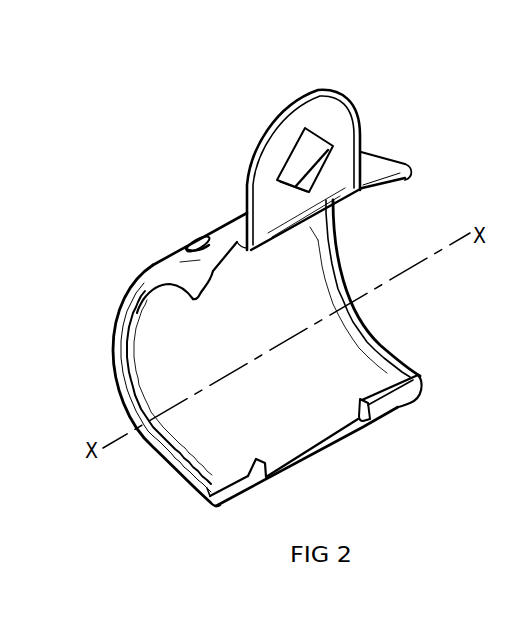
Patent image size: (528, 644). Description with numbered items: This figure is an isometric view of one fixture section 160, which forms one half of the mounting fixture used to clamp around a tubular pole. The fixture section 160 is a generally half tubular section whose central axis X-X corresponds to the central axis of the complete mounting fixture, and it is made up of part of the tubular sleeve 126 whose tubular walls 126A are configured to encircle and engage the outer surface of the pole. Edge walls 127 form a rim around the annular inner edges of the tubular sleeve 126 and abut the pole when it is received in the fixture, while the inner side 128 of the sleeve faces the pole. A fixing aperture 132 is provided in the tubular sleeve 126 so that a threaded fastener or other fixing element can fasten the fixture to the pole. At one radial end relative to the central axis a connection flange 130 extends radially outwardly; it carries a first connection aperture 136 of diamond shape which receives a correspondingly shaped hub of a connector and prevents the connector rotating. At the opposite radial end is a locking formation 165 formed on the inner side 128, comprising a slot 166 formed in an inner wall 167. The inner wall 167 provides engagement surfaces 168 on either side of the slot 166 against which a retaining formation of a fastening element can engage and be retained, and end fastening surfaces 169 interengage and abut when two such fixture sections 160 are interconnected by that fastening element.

The tubular sleeve 126 is at (164, 271).
The tubular walls 126A is at (226, 232).
The edge walls 127 is at (142, 400).
The inner side 128 is at (288, 266).
The connection flange 130 is at (336, 115).
The fixing aperture 132 is at (191, 242).
The first connection aperture 136 is at (297, 151).
The fixture section 160 is at (148, 450).
The locking formation 165 is at (316, 469).
The slot 166 is at (388, 406).
The inner wall 167 is at (233, 486).
The engagement surface 168 is at (246, 458).
The end fastening surface 169 is at (413, 397).